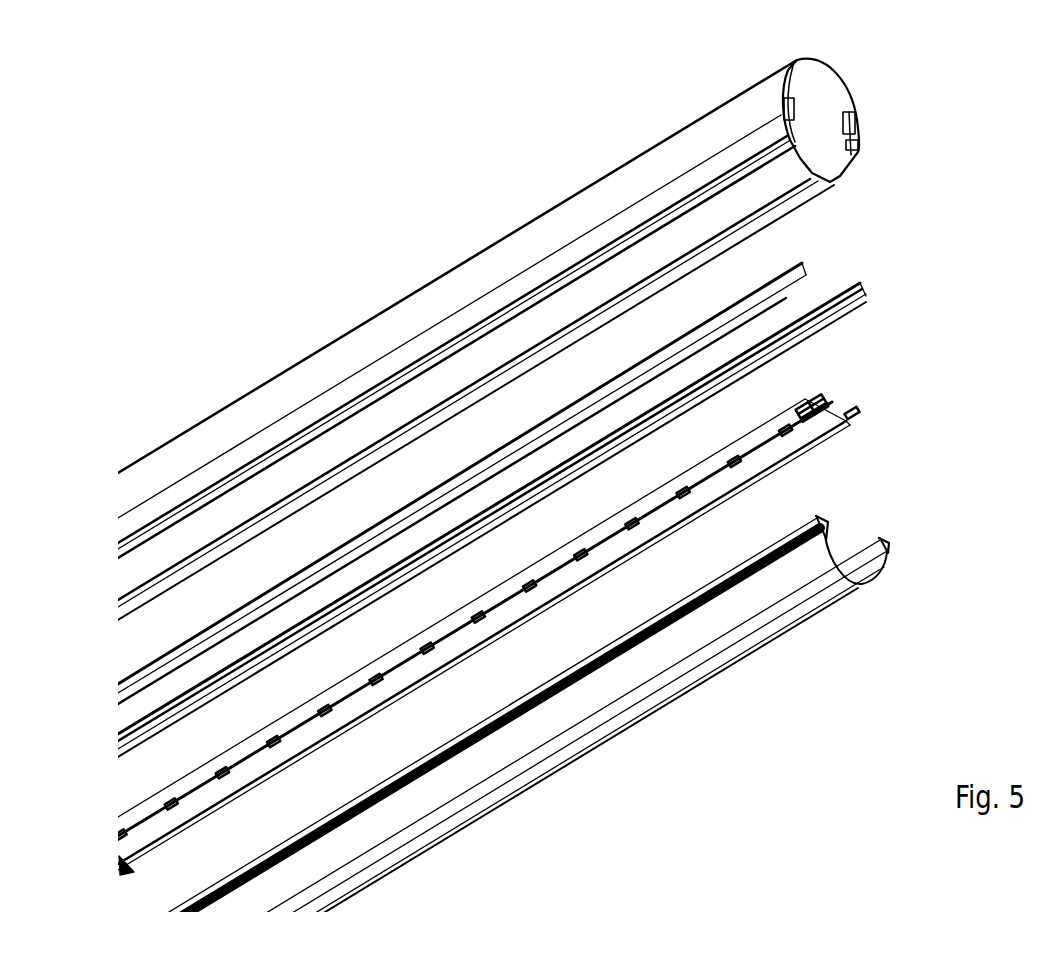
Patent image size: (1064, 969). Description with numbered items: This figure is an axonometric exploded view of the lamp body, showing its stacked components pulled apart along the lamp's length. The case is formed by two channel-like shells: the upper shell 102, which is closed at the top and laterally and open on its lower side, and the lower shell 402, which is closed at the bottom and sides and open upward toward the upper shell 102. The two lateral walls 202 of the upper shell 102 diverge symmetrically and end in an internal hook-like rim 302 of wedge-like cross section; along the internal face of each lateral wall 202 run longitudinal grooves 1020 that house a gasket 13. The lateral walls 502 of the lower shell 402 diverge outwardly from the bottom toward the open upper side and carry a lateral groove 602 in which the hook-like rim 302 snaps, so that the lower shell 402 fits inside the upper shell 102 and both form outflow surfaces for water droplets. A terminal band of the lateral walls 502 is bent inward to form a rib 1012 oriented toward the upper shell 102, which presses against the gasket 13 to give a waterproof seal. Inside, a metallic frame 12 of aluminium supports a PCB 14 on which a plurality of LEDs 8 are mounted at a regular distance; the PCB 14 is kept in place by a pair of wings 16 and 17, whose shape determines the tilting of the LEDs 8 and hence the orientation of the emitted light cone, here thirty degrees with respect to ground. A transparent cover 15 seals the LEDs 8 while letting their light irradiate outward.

The metallic frame 12 is at (546, 318).
The upper shell 102 is at (461, 264).
The lateral wall 202 is at (325, 380).
The groove 1020 is at (852, 128).
The hook-like rim 302 is at (860, 145).
The wing 16 is at (804, 192).
The wing 17 is at (660, 238).
The gasket 13 is at (863, 283).
The LEDs 8 is at (515, 601).
The PCB 14 is at (850, 413).
The transparent cover 15 is at (539, 702).
The groove 602 is at (520, 703).
The lateral wall 502 is at (498, 748).
The lower shell 402 is at (652, 717).
The rib 1012 is at (882, 540).